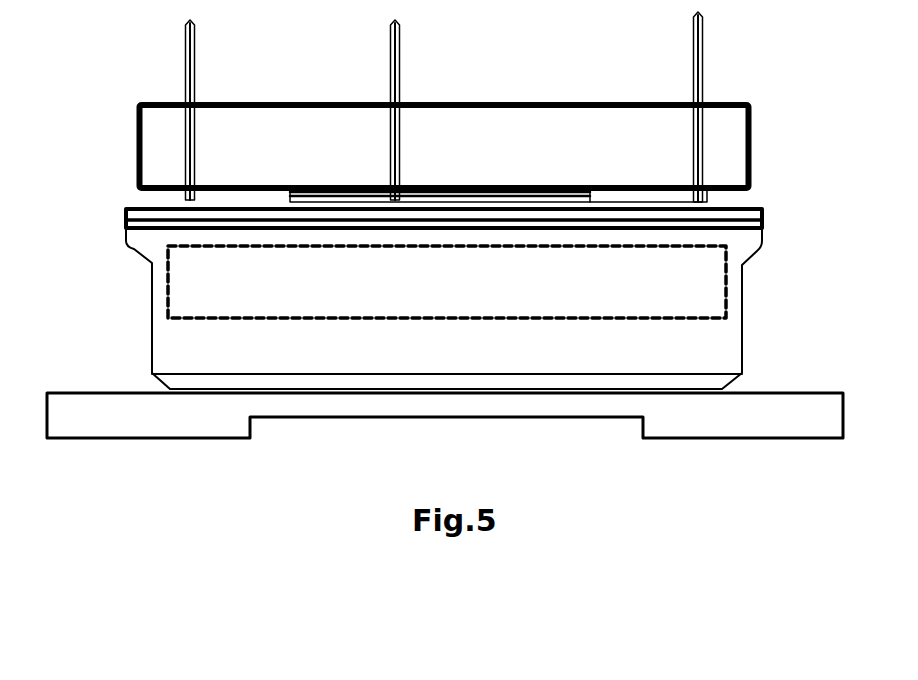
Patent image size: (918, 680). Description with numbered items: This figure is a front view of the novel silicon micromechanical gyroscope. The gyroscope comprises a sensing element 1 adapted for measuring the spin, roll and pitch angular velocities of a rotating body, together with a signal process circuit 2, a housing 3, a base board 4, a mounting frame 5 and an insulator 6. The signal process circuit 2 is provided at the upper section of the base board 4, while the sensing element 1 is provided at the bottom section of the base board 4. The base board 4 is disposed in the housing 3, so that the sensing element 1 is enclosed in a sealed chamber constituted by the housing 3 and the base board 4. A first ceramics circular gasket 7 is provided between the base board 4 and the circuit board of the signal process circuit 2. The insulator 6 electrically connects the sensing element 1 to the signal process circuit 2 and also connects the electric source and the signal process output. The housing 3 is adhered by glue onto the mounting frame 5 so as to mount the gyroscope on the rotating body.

The sensing element 1 is at (702, 298).
The signal process circuit 2 is at (444, 115).
The housing 3 is at (414, 308).
The base board 4 is at (412, 175).
The mounting frame 5 is at (441, 381).
The insulator 6 is at (443, 102).
The first ceramics circular gasket 7 is at (440, 118).